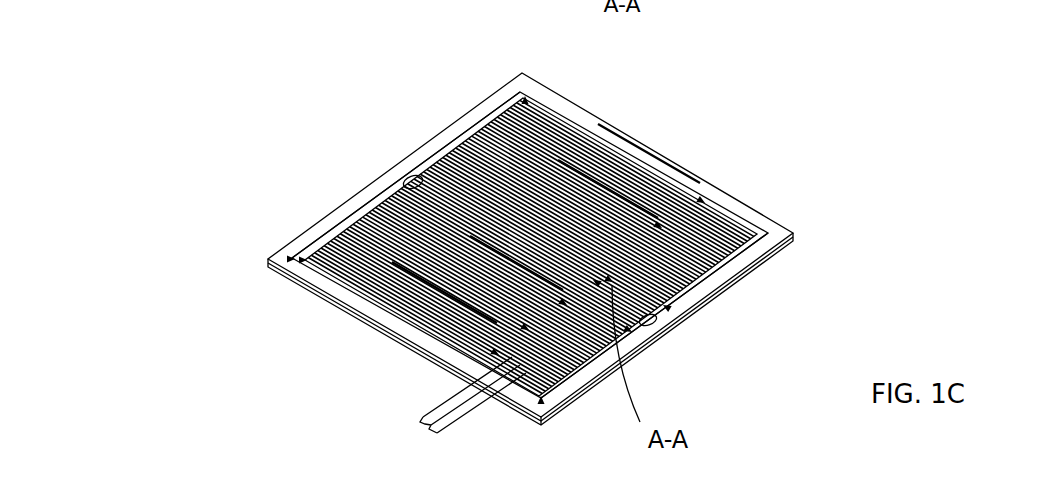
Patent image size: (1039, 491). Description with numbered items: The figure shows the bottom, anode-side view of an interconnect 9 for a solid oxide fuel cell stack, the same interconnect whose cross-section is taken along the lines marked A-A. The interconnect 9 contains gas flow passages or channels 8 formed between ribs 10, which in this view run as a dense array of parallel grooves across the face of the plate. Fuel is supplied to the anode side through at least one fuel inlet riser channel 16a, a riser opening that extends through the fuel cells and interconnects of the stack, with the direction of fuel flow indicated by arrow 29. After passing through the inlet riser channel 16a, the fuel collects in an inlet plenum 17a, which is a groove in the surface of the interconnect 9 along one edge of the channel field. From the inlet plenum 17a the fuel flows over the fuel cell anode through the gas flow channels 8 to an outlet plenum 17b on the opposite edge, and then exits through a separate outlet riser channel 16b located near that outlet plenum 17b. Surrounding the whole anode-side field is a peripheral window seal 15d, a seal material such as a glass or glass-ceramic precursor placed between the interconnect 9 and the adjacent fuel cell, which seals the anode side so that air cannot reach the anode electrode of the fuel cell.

The gas flow channels 8 is at (467, 405).
The interconnect 9 is at (812, 225).
The ribs 10 is at (407, 318).
The peripheral window seal 15d is at (652, 155).
The fuel inlet riser channel 16a is at (404, 182).
The outlet riser channel 16b is at (657, 323).
The inlet plenum 17a is at (470, 136).
The outlet plenum 17b is at (692, 291).
The fuel flow arrow 29 is at (567, 127).